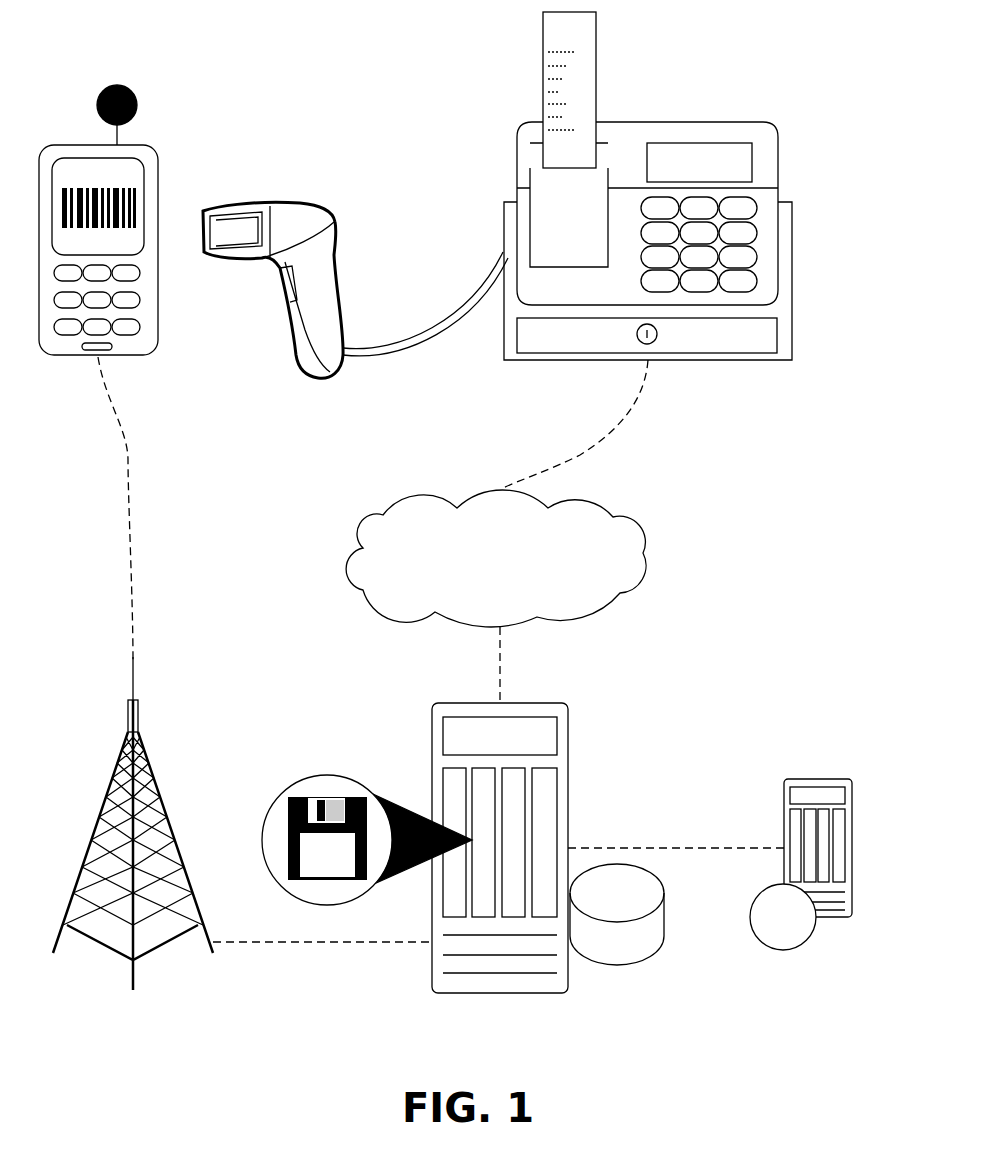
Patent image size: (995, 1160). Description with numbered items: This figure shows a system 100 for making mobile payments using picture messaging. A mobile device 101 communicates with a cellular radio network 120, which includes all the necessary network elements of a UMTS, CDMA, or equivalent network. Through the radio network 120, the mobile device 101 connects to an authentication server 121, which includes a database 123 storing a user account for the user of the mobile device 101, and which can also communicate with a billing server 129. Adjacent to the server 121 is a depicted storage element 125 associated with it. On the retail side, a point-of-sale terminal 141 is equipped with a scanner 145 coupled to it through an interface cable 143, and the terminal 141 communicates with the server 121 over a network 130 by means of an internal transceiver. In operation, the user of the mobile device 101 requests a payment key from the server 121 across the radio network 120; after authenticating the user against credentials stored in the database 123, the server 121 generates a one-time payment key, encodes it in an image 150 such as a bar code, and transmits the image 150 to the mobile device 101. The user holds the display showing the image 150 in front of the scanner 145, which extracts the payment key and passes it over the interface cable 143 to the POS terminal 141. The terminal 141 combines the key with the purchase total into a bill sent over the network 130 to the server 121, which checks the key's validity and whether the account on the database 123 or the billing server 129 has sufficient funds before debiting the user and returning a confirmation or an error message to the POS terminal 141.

The system 100 is at (238, 54).
The mobile device 101 is at (133, 355).
The image 150 is at (133, 187).
The scanner 145 is at (273, 290).
The interface cable 143 is at (433, 332).
The point-of-sale terminal 141 is at (648, 122).
The network 130 is at (496, 558).
The cellular radio network 120 is at (145, 750).
The authentication server 121 is at (547, 703).
The storage / software 125 is at (320, 777).
The database 123 is at (622, 967).
The billing server 129 is at (817, 779).